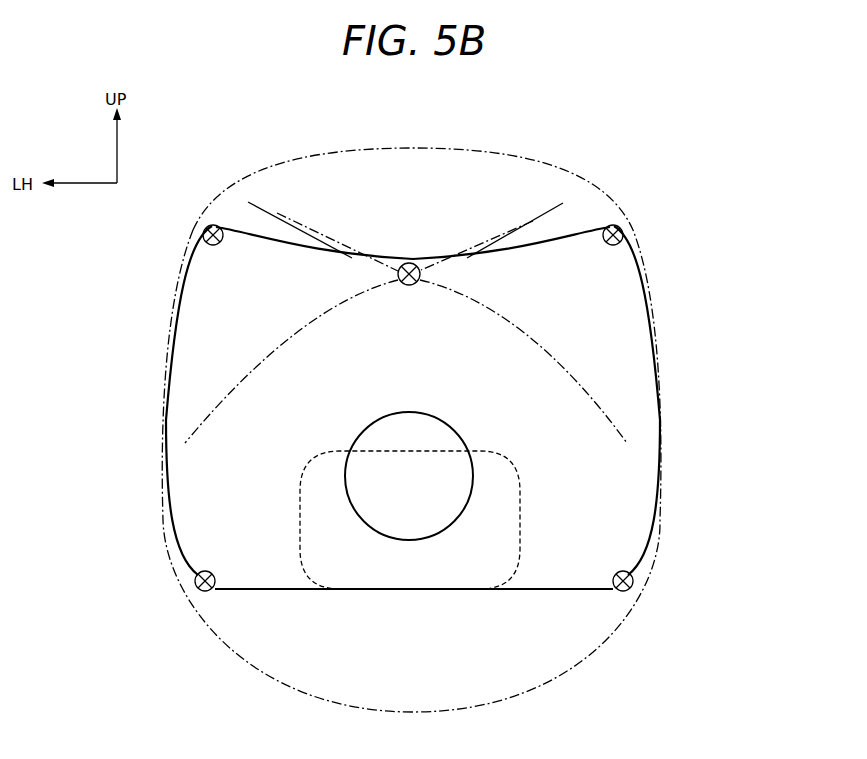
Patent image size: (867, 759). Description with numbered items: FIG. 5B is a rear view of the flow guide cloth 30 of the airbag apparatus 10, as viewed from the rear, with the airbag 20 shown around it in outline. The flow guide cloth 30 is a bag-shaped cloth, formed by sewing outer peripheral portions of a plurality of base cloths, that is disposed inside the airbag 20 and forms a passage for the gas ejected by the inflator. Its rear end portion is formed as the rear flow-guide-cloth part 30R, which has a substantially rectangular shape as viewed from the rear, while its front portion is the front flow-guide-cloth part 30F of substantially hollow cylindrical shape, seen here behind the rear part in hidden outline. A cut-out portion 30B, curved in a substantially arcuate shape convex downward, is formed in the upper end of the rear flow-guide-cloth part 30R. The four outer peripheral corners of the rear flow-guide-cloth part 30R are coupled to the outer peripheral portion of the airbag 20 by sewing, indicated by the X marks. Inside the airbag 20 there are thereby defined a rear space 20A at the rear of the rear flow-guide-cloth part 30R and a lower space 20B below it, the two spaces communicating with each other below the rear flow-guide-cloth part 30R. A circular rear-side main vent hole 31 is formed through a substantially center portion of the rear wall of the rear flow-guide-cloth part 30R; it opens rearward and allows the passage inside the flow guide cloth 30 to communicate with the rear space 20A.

The airbag apparatus 10 is at (698, 184).
The airbag 20 is at (268, 160).
The rear space 20A is at (424, 200).
The lower space 20B is at (440, 684).
The flow guide cloth 30 is at (513, 250).
The cut-out portion 30B is at (378, 258).
The rear flow-guide-cloth part 30R is at (198, 312).
The front flow-guide-cloth part 30F is at (517, 540).
The rear-side main vent hole 31 is at (406, 539).